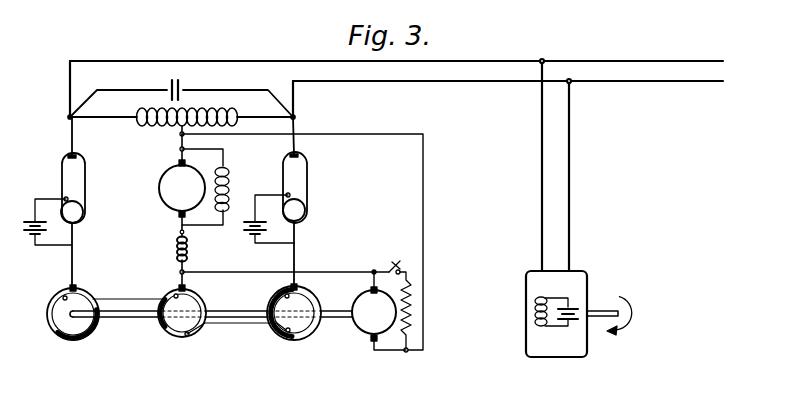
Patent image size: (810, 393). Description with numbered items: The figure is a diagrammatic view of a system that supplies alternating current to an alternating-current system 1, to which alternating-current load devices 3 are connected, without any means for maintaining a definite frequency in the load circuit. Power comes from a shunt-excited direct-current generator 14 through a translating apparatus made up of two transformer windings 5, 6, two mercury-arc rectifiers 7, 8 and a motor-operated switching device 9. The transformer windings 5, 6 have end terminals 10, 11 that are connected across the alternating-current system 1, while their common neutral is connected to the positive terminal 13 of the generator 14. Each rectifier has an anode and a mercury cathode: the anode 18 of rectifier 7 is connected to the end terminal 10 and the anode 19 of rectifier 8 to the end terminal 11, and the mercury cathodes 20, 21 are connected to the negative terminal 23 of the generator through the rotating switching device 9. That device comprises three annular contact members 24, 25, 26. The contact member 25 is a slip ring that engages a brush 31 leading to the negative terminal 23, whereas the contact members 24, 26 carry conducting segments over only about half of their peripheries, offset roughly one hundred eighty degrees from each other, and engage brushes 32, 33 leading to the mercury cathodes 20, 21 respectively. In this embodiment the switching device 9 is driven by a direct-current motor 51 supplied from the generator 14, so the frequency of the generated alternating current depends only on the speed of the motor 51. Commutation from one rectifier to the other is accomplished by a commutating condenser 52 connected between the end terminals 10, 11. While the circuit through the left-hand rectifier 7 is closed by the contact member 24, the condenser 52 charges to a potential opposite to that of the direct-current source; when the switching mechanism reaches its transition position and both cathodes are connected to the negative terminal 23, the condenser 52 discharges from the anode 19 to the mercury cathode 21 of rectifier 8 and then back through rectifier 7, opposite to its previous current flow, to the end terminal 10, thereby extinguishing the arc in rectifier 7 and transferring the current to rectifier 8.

The alternating-current system 1 is at (470, 63).
The alternating-current load device 3 is at (582, 283).
The transformer winding 5 is at (170, 125).
The transformer winding 6 is at (250, 104).
The mercury-arc rectifier 7 is at (66, 166).
The mercury-arc rectifier 8 is at (306, 172).
The switching device 9 is at (247, 305).
The end terminal 10 is at (68, 117).
The end terminal 11 is at (296, 117).
The positive terminal 13 is at (186, 149).
The direct-current generator 14 is at (170, 184).
The anode 18 is at (70, 155).
The anode 19 is at (297, 156).
The mercury cathode 20 is at (82, 220).
The mercury cathode 21 is at (304, 211).
The negative terminal 23 is at (178, 235).
The contact member 24 is at (58, 324).
The contact member 25 is at (177, 327).
The contact member 26 is at (305, 328).
The brush 31 is at (186, 287).
The brush 32 is at (77, 287).
The brush 33 is at (298, 286).
The direct-current motor 51 is at (296, 306).
The commutating condenser 52 is at (180, 87).